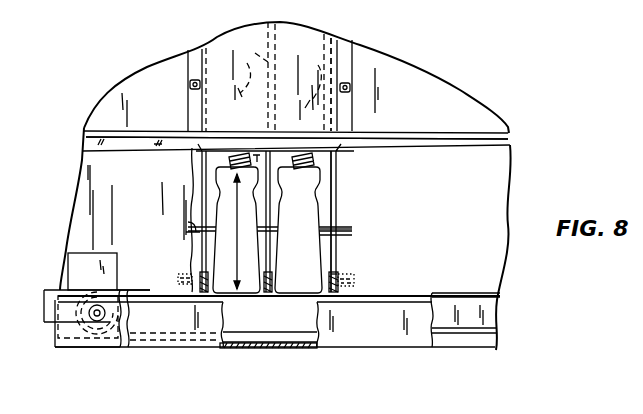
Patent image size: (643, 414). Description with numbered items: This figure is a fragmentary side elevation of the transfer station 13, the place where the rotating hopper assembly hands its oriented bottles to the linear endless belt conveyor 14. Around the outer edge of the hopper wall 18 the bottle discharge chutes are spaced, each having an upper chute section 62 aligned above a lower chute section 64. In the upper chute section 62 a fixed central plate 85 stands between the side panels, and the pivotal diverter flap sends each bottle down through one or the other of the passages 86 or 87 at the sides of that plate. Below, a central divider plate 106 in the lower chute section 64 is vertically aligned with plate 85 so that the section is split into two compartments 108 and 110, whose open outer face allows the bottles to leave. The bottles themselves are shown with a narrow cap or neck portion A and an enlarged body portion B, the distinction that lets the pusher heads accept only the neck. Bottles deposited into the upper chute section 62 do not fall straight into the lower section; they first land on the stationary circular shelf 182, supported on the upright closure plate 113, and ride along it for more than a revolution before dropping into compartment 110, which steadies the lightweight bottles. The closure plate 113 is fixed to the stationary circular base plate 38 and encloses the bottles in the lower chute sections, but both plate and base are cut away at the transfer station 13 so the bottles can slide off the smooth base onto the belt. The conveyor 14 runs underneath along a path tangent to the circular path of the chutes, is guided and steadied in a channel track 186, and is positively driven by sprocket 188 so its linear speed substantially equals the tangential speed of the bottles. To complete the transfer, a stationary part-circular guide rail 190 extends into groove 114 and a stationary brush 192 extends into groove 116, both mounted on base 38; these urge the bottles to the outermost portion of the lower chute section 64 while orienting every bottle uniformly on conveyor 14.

The transfer station 13 is at (160, 360).
The linear endless belt conveyor 14 is at (283, 342).
The wall 18 is at (154, 105).
The stationary circular base plate 38 is at (140, 295).
The upper chute section 62 is at (332, 63).
The lower chute section 64 is at (337, 183).
The fixed central plate 85 is at (254, 45).
The passage 86 is at (224, 91).
The passage 87 is at (295, 117).
The central divider plate 106 is at (277, 208).
The compartment 108 is at (230, 161).
The compartment 110 is at (337, 157).
The stationary upright circular closure plate 113 is at (124, 194).
The groove 114 is at (330, 229).
The groove 116 is at (331, 273).
The shelf 182 is at (405, 133).
The channel track 186 is at (381, 334).
The sprocket 188 is at (97, 322).
The guide rail 190 is at (188, 222).
The brush 192 is at (350, 279).
The narrow cap or neck portion A is at (252, 133).
The enlarged body portion B is at (236, 231).